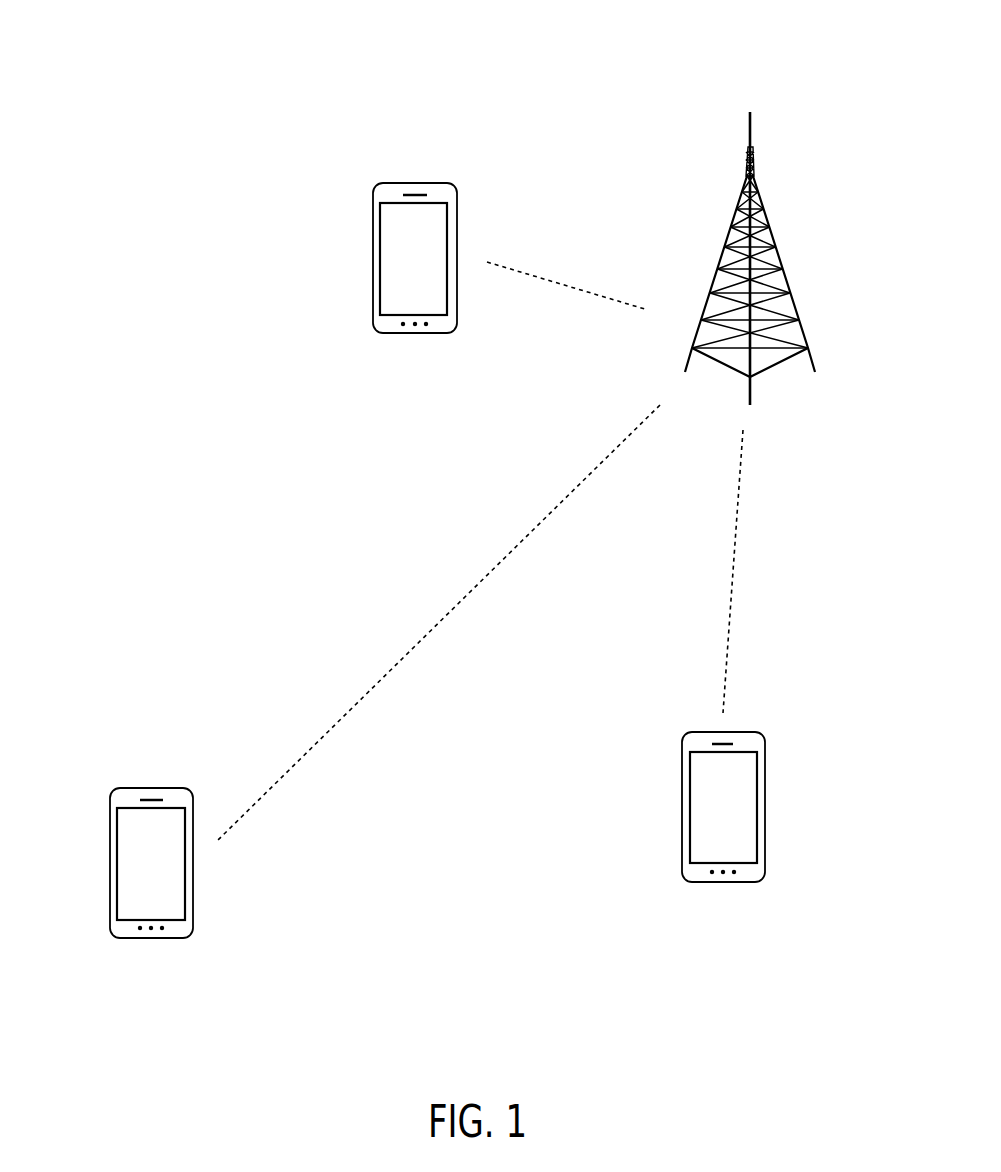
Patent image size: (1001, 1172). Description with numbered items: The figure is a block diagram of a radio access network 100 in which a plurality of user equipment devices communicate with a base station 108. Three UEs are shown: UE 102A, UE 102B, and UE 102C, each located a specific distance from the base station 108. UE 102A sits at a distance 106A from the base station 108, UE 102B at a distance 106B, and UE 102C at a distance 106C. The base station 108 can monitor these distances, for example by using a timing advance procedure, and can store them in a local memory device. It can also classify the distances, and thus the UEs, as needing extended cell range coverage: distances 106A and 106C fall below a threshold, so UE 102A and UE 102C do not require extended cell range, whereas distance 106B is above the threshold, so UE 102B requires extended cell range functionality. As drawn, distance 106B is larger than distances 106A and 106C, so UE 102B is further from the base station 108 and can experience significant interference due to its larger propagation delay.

The radio access network 100 is at (98, 82).
The UE 102A is at (368, 190).
The UE 102B is at (137, 770).
The UE 102C is at (680, 732).
The distance 106A is at (585, 298).
The distance 106B is at (440, 602).
The distance 106C is at (742, 563).
The base station 108 is at (783, 218).